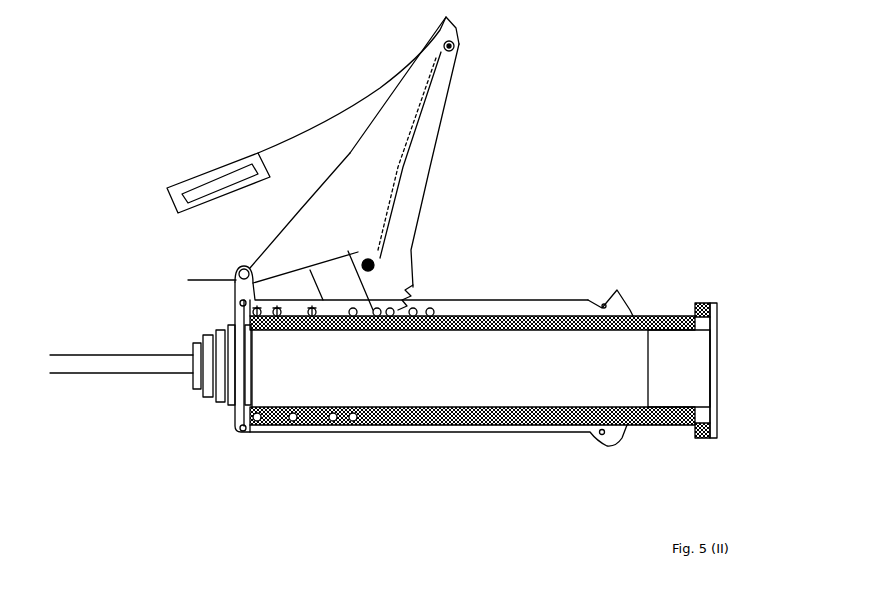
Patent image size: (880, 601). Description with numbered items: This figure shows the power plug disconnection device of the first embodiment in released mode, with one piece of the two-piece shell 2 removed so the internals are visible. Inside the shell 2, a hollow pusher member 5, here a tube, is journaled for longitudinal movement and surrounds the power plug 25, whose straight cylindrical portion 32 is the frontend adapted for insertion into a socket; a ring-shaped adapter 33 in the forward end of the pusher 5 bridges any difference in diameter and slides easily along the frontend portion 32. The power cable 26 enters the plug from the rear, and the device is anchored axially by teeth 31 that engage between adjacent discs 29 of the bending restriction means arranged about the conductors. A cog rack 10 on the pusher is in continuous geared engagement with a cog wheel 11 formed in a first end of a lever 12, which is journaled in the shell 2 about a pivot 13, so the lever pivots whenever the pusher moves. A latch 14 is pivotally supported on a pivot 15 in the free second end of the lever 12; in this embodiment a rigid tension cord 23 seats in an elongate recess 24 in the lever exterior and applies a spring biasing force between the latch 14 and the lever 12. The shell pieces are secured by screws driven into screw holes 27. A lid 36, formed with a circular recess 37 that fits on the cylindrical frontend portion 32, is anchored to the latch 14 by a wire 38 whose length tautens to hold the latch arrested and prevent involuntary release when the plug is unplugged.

The two-piece shell 2 is at (517, 436).
The hollow pusher member 5 is at (658, 314).
The cog rack 10 is at (437, 308).
The cog wheel 11 is at (418, 282).
The lever 12 is at (426, 190).
The pivot 13 is at (362, 260).
The latch 14 is at (412, 65).
The pivot 15 is at (457, 45).
The tension cord 23 is at (290, 226).
The elongate recess 24 is at (415, 150).
The power plug 25 is at (471, 378).
The power cable 26 is at (95, 358).
The screw holes 27 is at (602, 303).
The discs 29 is at (194, 343).
The teeth 31 is at (238, 400).
The straight cylindrical portion 32 is at (671, 378).
The ring-shaped adapter 33 is at (713, 305).
The lid 36 is at (166, 191).
The circular recess 37 is at (212, 188).
The wire 38 is at (347, 122).